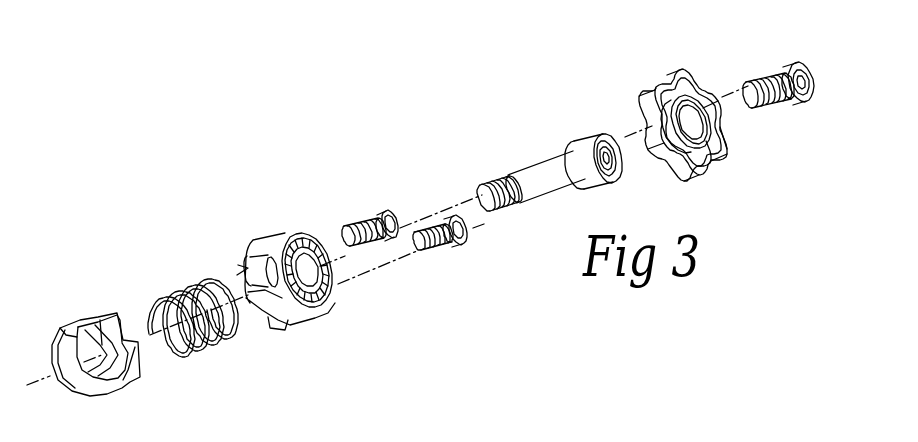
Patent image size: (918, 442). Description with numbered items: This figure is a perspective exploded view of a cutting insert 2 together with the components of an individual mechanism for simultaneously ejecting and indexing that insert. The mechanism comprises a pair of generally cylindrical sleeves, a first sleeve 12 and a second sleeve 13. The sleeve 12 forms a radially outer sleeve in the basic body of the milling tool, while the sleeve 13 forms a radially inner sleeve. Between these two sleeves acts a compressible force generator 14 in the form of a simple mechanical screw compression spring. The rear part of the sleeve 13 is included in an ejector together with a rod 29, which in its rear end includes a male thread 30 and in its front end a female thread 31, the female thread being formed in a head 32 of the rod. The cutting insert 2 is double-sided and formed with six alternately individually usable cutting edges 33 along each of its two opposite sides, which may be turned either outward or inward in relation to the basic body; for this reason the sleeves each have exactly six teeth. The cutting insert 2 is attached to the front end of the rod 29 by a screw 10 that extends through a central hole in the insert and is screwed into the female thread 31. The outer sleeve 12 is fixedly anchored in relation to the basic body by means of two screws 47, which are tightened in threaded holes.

The cutting insert 2 is at (686, 115).
The screw 10 is at (765, 73).
The first sleeve 12 is at (286, 222).
The second sleeve 13 is at (77, 297).
The compressible force generator 14 is at (192, 292).
The rod 29 is at (550, 154).
The male thread 30 is at (503, 186).
The female thread 31 is at (621, 160).
The head 32 is at (581, 142).
The cutting edges 33 is at (730, 148).
The screws 47 is at (366, 231).